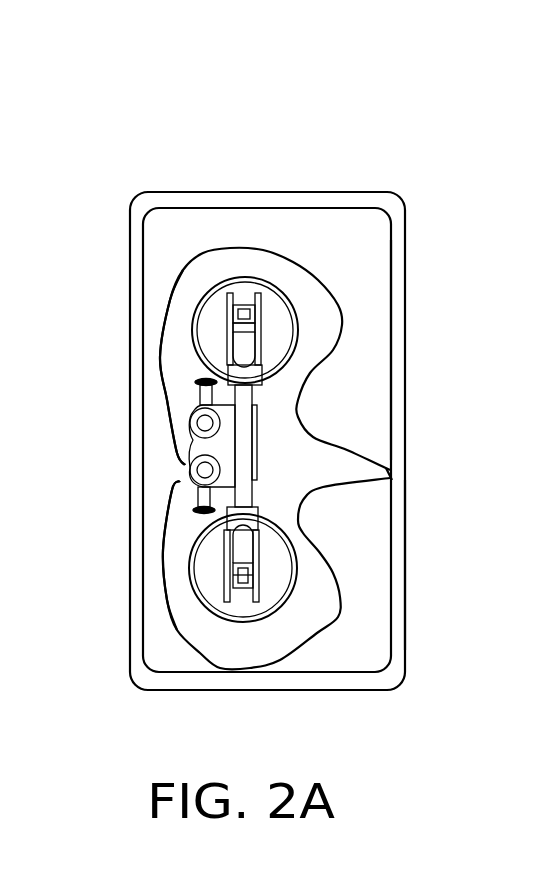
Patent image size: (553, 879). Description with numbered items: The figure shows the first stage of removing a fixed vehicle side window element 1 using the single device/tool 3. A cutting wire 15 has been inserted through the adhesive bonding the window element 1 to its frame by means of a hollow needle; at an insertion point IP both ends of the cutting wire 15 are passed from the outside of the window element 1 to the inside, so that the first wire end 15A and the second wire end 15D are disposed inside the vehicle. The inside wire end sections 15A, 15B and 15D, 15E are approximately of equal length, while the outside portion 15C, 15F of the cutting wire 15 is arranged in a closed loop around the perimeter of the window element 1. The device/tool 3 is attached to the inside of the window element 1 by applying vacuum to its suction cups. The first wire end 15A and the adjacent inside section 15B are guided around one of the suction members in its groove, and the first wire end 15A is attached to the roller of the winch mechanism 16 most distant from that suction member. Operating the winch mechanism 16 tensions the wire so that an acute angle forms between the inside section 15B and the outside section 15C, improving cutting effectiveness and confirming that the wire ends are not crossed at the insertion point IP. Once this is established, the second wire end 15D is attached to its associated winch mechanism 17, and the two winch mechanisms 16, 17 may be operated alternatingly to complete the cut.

The side window element 1 is at (207, 157).
The device/tool 3 is at (170, 240).
The cutting wire 15 is at (318, 135).
The first wire end 15A is at (168, 508).
The inside wire section 15B is at (335, 618).
The outside wire section 15C is at (404, 567).
The second wire end 15D is at (168, 433).
The inside wire section 15E is at (305, 270).
The outside wire section 15F is at (405, 332).
The insertion point IP is at (393, 472).
The winch mechanism 16 is at (190, 413).
The winch mechanism 17 is at (188, 468).